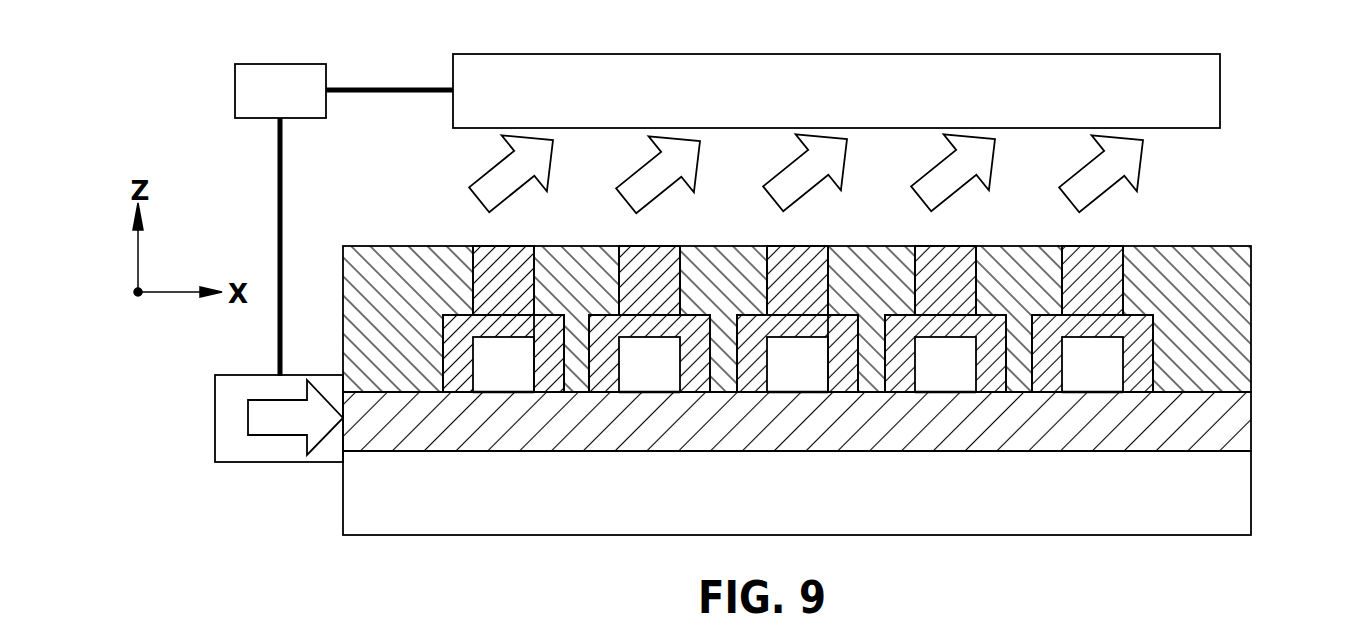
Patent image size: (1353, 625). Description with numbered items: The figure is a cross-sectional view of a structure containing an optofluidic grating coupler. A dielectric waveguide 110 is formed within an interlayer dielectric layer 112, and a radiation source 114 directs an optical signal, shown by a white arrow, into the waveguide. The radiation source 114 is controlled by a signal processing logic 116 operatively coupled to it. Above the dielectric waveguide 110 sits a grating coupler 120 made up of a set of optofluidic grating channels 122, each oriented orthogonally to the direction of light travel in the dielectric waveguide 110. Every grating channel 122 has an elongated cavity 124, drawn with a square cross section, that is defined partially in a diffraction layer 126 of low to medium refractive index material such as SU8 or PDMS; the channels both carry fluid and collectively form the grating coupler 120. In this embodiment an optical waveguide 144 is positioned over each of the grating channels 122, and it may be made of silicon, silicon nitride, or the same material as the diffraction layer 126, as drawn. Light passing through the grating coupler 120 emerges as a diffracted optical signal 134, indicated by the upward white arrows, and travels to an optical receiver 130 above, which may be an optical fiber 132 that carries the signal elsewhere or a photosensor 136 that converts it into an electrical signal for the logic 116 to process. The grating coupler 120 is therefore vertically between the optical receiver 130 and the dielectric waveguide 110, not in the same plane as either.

The dielectric waveguide 110 is at (408, 418).
The interlayer dielectric (ILD) layer 112 is at (1223, 328).
The radiation source 114 is at (277, 450).
The signal processing logic 116 is at (257, 107).
The grating coupler 120 is at (1153, 333).
The optofluidic grating channel 122 is at (520, 393).
The cavity 124 is at (494, 378).
The diffraction layer 126 is at (548, 335).
The optical receiver 130 is at (836, 91).
The optical fiber 132 is at (836, 91).
The photosensor 136 is at (635, 105).
The diffracted optical signal 134 is at (827, 153).
The optical waveguide 144 is at (487, 258).